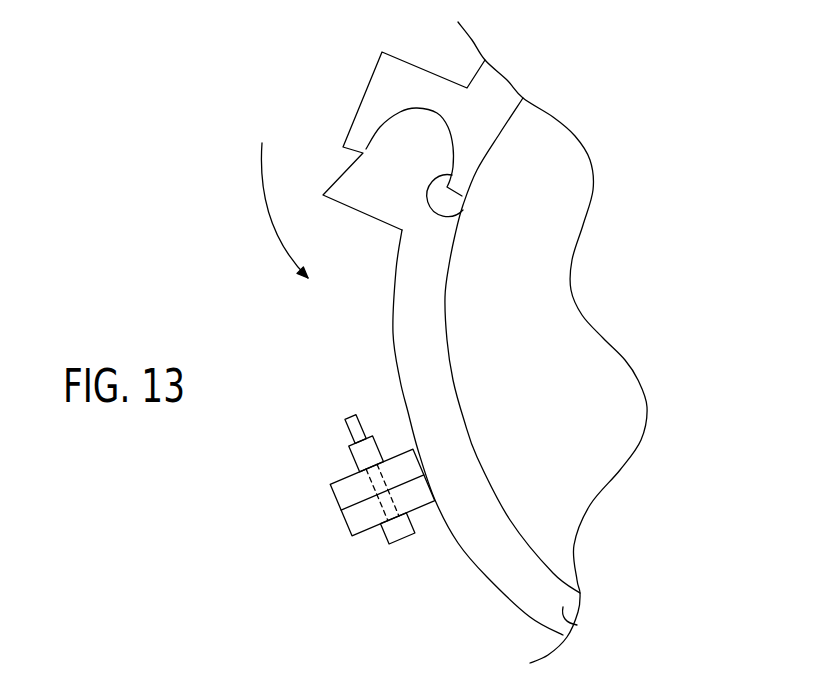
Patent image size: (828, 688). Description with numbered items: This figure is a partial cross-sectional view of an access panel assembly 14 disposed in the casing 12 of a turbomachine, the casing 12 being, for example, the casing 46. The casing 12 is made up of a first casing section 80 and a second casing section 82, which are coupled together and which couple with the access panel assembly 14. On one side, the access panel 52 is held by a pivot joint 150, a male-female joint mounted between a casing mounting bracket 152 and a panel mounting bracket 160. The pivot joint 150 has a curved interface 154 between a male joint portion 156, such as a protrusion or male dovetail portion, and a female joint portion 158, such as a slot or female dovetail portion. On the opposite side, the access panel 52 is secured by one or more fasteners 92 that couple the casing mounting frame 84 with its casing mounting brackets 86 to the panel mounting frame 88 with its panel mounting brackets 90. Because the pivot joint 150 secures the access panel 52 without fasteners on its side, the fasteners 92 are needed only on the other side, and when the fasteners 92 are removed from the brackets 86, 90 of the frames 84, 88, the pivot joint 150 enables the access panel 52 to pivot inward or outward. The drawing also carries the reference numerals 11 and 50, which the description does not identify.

The stand body 11 is at (643, 317).
The casing 12 is at (488, 578).
The access panel assembly 14 is at (298, 377).
The casing 46 is at (533, 620).
The first rail edge 50 is at (477, 457).
The access panel 52 is at (393, 343).
The first casing section 80 is at (495, 92).
The second casing section 82 is at (577, 625).
The casing mounting frame 84 is at (348, 532).
The casing mounting brackets 86 is at (340, 518).
The panel mounting frame 88 is at (330, 490).
The panel mounting brackets 90 is at (340, 508).
The fasteners 92 is at (350, 438).
The pivot joint 150 is at (317, 83).
The casing mounting bracket 152 is at (423, 67).
The curved interface 154 is at (447, 123).
The male joint portion 156 is at (423, 148).
The female joint portion 158 is at (457, 223).
The panel mounting bracket 160 is at (363, 212).